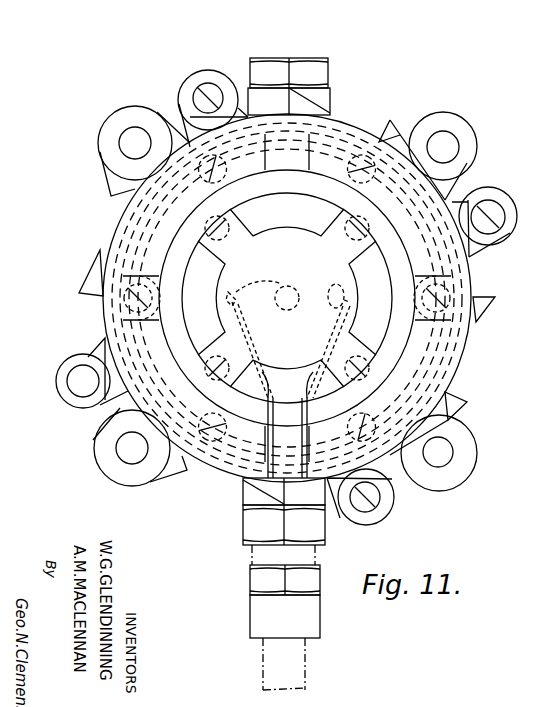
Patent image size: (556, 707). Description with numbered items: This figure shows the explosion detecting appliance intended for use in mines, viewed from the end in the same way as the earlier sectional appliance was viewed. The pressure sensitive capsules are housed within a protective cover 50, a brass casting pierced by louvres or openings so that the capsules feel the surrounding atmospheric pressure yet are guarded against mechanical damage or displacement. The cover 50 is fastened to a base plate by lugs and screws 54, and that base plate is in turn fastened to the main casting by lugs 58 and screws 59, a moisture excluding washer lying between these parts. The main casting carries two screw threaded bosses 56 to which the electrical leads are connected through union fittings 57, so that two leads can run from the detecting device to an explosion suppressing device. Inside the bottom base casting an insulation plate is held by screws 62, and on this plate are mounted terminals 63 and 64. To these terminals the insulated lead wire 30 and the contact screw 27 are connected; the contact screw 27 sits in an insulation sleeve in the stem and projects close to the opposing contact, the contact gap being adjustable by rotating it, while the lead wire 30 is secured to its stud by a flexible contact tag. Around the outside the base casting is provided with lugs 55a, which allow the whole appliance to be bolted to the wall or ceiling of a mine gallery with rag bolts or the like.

The protective cover 50 is at (130, 214).
The lugs 55a is at (470, 164).
The screws 54 is at (360, 516).
The screw threaded bosses 56 is at (243, 495).
The union fittings 57 is at (250, 572).
The lugs 58 is at (420, 383).
The screws 59 is at (405, 417).
The screws 62 is at (440, 364).
The terminal 63 is at (233, 292).
The terminal 64 is at (340, 286).
The contact screw 27 is at (286, 310).
The insulated lead wire 30 is at (331, 316).